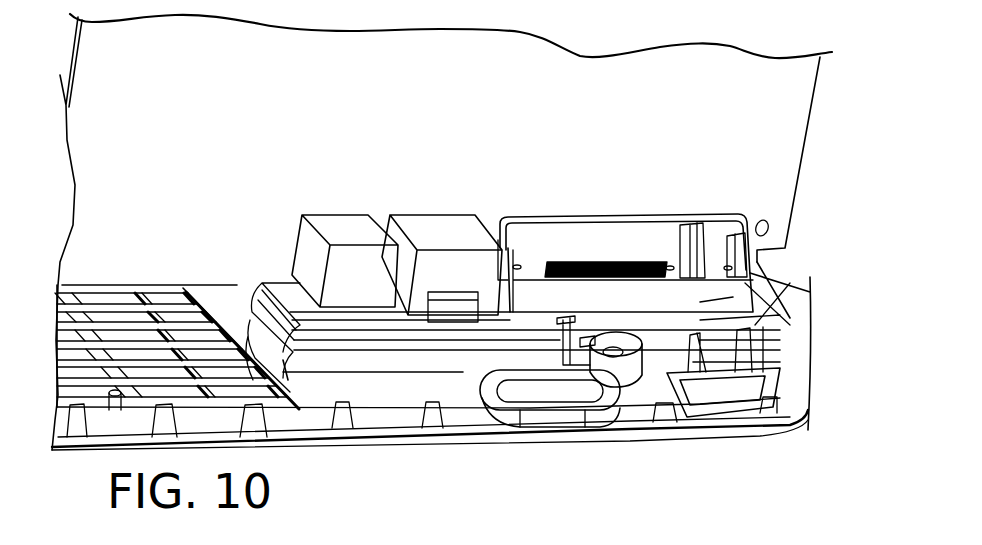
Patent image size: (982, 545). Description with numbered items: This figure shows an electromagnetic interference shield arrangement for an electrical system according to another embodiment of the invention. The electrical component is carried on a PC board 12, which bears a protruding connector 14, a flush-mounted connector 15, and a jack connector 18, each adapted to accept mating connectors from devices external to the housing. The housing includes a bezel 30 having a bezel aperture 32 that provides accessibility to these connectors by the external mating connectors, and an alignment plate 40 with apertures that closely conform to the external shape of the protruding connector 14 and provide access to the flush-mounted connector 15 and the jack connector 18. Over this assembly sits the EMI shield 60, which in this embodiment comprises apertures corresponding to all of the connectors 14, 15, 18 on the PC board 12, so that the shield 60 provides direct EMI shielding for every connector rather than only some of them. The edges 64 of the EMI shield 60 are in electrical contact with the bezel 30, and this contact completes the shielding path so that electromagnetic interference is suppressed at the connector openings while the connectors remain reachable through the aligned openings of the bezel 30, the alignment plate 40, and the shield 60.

The PC board 12 is at (808, 122).
The protruding connector 14 is at (700, 302).
The flush-mounted connector 15 is at (442, 230).
The jack connector 18 is at (345, 230).
The bezel 30 is at (422, 393).
The bezel aperture 32 is at (380, 358).
The alignment plate 40 is at (245, 302).
The EMI shield 60 is at (765, 318).
The edges 64 is at (763, 367).